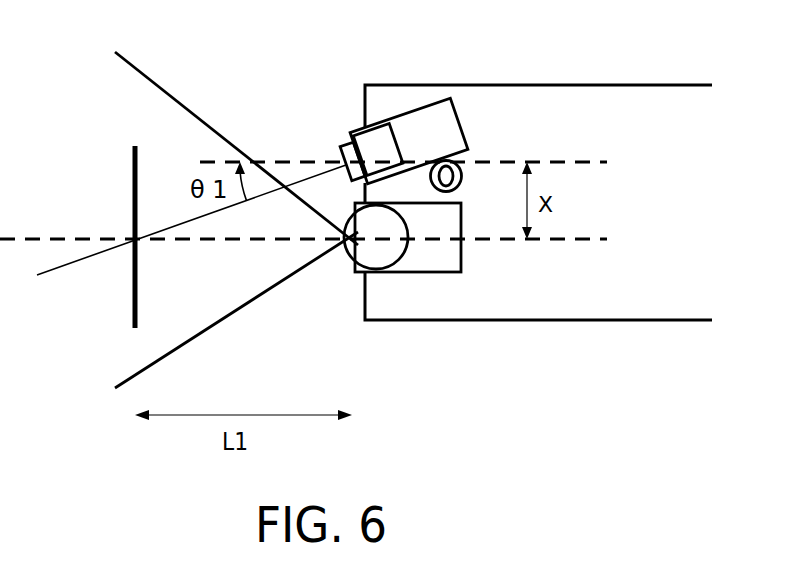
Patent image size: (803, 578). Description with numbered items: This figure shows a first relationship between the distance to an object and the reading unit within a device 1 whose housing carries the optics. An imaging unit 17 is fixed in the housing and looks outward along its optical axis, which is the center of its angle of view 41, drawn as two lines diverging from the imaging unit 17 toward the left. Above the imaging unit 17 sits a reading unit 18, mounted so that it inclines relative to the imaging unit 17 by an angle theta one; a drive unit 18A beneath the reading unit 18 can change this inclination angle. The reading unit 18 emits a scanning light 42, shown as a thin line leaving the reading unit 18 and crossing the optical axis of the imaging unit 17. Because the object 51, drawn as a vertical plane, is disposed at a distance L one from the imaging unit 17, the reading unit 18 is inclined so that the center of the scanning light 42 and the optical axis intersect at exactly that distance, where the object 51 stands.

The housing 1 is at (568, 85).
The imaging unit 17 is at (461, 272).
The reading unit 18 is at (467, 125).
The drive unit 18A is at (461, 182).
The angle of view 41 is at (132, 62).
The scanning light 42 is at (70, 263).
The object 51 is at (133, 172).